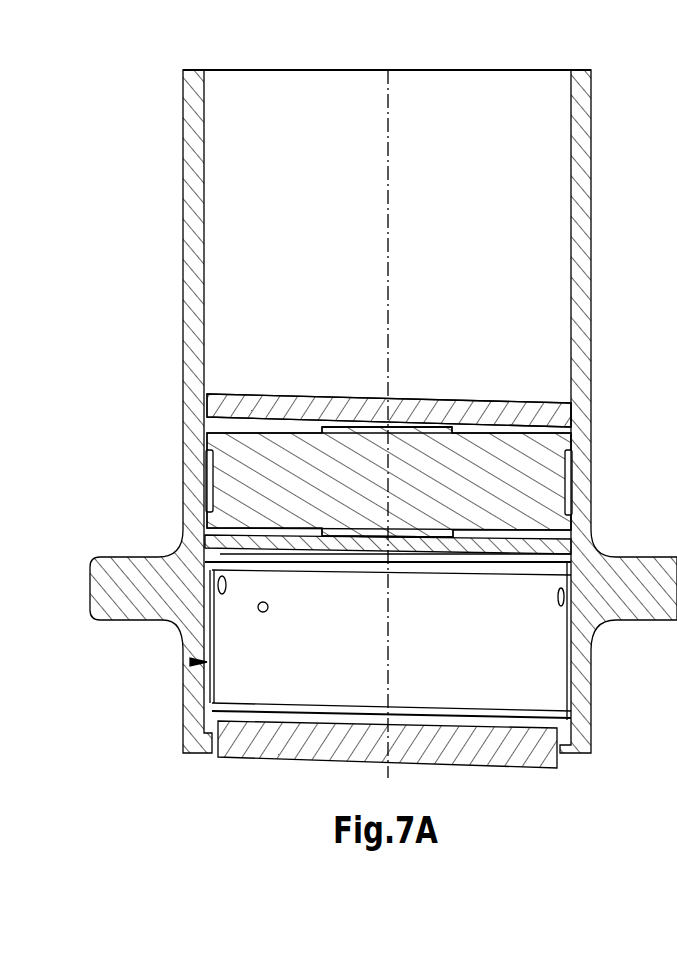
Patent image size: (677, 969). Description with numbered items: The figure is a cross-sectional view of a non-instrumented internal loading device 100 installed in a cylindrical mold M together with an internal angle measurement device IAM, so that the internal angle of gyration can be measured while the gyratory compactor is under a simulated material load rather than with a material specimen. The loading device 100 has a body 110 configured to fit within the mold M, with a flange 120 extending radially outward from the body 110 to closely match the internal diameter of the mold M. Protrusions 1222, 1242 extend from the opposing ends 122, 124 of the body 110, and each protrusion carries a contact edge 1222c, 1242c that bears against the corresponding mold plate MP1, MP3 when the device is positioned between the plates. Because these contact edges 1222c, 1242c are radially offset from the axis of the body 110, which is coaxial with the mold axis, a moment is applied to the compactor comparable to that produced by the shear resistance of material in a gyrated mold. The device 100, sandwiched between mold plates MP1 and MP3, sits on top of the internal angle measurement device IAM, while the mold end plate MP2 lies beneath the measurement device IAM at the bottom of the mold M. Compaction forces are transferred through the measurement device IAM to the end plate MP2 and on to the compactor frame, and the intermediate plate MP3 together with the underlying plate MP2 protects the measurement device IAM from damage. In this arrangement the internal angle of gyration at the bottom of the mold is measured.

The mold M is at (192, 366).
The non-instrumented internal loading device 100 is at (382, 556).
The body 110 is at (245, 482).
The flange 120 is at (208, 443).
The end of the body 122 is at (537, 423).
The protrusion 1222 is at (410, 428).
The contact edge 1222c is at (448, 428).
The end of the body 124 is at (573, 537).
The protrusion 1242 is at (423, 536).
The contact edge 1242c is at (454, 537).
The mold plate MP1 is at (315, 413).
The mold end plate MP2 is at (283, 743).
The intermediate mold plate MP3 is at (482, 552).
The internal angle measurement device IAM is at (192, 662).